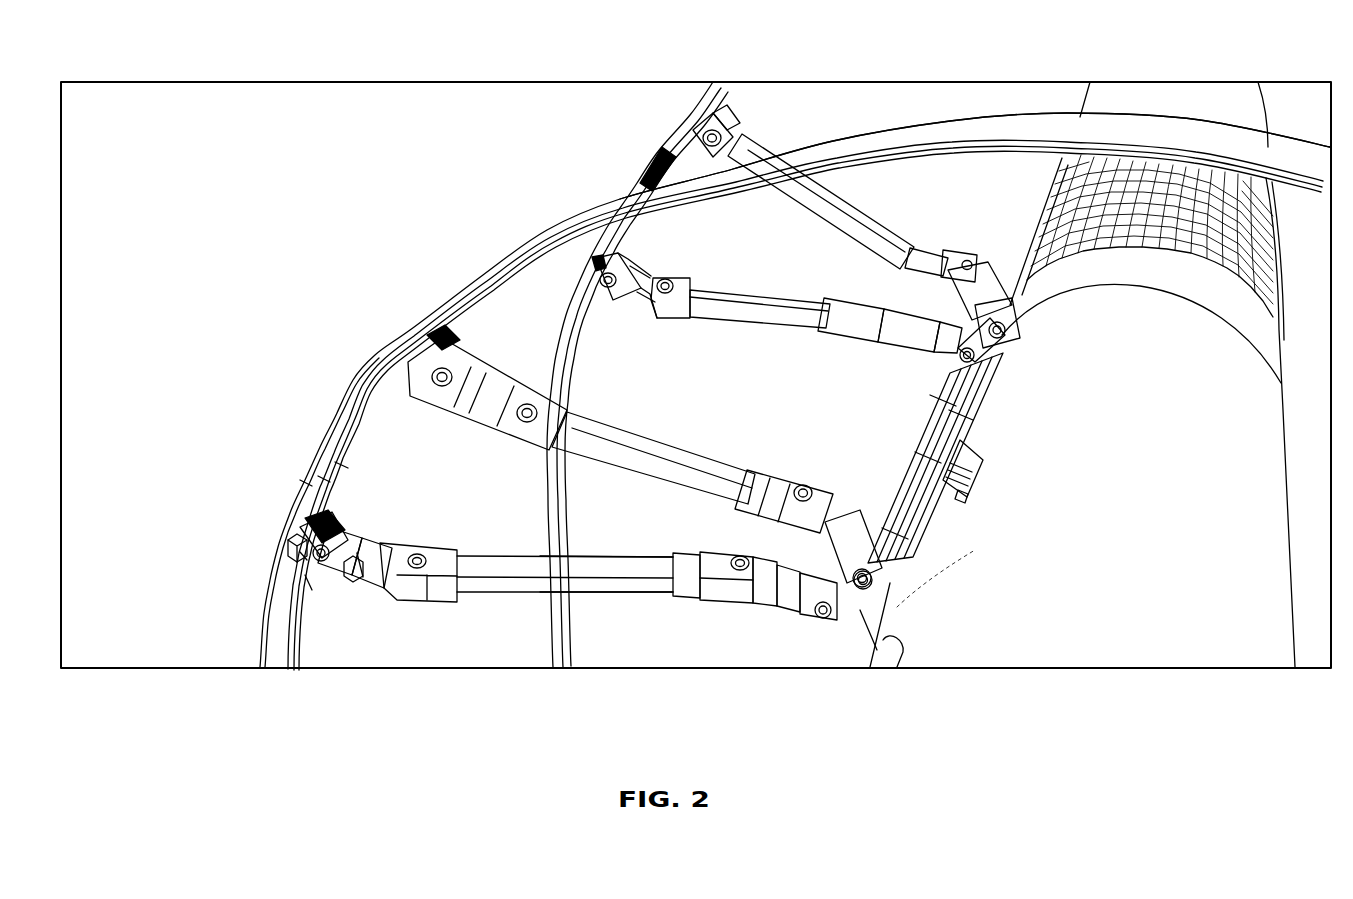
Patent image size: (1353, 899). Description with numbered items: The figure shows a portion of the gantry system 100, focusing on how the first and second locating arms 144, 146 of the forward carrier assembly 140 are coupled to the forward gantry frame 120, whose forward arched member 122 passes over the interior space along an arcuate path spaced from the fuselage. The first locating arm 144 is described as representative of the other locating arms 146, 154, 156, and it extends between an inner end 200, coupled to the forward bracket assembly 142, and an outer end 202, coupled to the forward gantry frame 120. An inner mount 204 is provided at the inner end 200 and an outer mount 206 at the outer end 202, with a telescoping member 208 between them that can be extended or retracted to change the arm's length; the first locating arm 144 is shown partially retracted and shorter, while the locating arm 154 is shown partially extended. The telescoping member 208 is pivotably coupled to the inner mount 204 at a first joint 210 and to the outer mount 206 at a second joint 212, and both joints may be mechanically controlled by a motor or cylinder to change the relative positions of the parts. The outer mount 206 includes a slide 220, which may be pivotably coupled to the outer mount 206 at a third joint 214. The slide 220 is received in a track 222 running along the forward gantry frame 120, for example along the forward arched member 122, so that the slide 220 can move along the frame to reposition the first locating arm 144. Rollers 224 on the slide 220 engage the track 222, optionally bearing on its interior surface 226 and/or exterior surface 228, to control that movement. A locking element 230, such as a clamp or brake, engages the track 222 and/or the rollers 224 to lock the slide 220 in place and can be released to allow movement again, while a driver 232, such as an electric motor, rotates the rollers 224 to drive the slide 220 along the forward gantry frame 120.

The gantry system 100 is at (433, 150).
The forward gantry frame 120 is at (335, 386).
The forward arched member 122 is at (946, 134).
The forward carrier assembly 140 is at (640, 641).
The forward bracket assembly 142 is at (876, 620).
The first locating arm 144 is at (520, 600).
The second locating arm 146 is at (648, 453).
The locating arm 154 is at (793, 318).
The locating arm 156 is at (863, 217).
The inner end 200 is at (826, 640).
The outer end 202 is at (347, 505).
The inner mount 204 is at (780, 607).
The outer mount 206 is at (373, 550).
The telescoping member 208 is at (618, 585).
The first joint 210 is at (750, 557).
The second joint 212 is at (420, 557).
The third joint 214 is at (310, 578).
The slide 220 is at (323, 563).
The track 222 is at (308, 486).
The rollers 224 is at (313, 527).
The interior surface 226 is at (343, 465).
The exterior surface 228 is at (323, 480).
The locking element 230 is at (330, 530).
The driver 232 is at (303, 552).